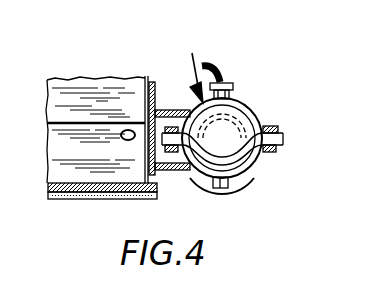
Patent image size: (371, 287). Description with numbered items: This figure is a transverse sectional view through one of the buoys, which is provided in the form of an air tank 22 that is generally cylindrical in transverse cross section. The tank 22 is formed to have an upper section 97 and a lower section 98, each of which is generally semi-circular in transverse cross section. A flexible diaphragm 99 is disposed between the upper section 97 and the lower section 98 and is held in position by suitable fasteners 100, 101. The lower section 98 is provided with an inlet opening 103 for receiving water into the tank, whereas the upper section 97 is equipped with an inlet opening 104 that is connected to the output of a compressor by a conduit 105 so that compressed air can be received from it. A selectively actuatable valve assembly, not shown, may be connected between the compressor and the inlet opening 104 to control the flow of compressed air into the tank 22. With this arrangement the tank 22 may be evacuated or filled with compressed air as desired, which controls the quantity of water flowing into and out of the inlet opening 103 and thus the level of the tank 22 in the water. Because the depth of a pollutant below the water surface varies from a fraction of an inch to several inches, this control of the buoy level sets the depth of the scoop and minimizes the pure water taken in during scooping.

The buoy 22 is at (188, 67).
The upper section 97 is at (251, 110).
The lower section 98 is at (252, 166).
The flexible diaphragm 99 is at (200, 157).
The fastener 100 is at (166, 118).
The fastener 101 is at (276, 124).
The inlet opening 103 is at (228, 189).
The inlet opening 104 is at (235, 93).
The conduit 105 is at (215, 62).